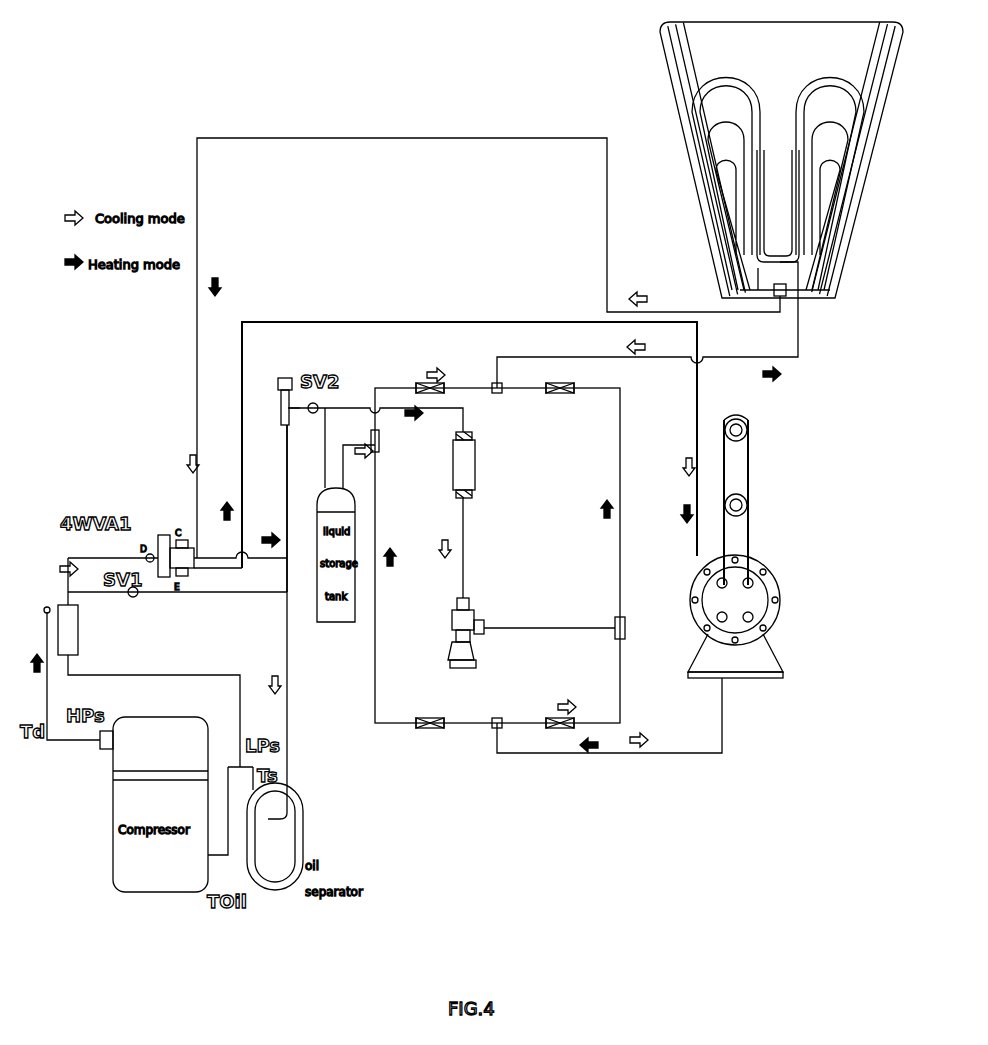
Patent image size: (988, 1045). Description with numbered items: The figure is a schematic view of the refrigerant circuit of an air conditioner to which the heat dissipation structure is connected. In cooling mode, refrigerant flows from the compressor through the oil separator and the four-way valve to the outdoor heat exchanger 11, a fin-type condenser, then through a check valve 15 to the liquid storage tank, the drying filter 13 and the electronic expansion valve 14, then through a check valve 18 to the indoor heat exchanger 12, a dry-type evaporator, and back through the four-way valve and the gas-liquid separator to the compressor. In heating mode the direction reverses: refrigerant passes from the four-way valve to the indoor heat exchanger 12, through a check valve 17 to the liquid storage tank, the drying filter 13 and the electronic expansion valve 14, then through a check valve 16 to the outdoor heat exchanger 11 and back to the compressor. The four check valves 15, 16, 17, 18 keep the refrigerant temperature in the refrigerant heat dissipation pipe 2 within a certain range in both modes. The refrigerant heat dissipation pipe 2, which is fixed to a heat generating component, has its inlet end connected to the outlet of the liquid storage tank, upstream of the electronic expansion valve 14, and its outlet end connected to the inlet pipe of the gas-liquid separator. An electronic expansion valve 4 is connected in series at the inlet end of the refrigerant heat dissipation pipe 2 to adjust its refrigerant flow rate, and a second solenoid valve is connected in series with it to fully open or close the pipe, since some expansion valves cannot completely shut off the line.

The refrigerant heat dissipation pipe 2 is at (286, 478).
The electronic expansion valve 4 is at (290, 385).
The outdoor heat exchanger 11 is at (868, 178).
The indoor heat exchanger 12 is at (782, 582).
The drying filter 13 is at (477, 465).
The electronic expansion valve 14 is at (470, 625).
The check valve 15 is at (437, 384).
The check valve 16 is at (556, 384).
The check valve 17 is at (432, 729).
The check valve 18 is at (562, 729).